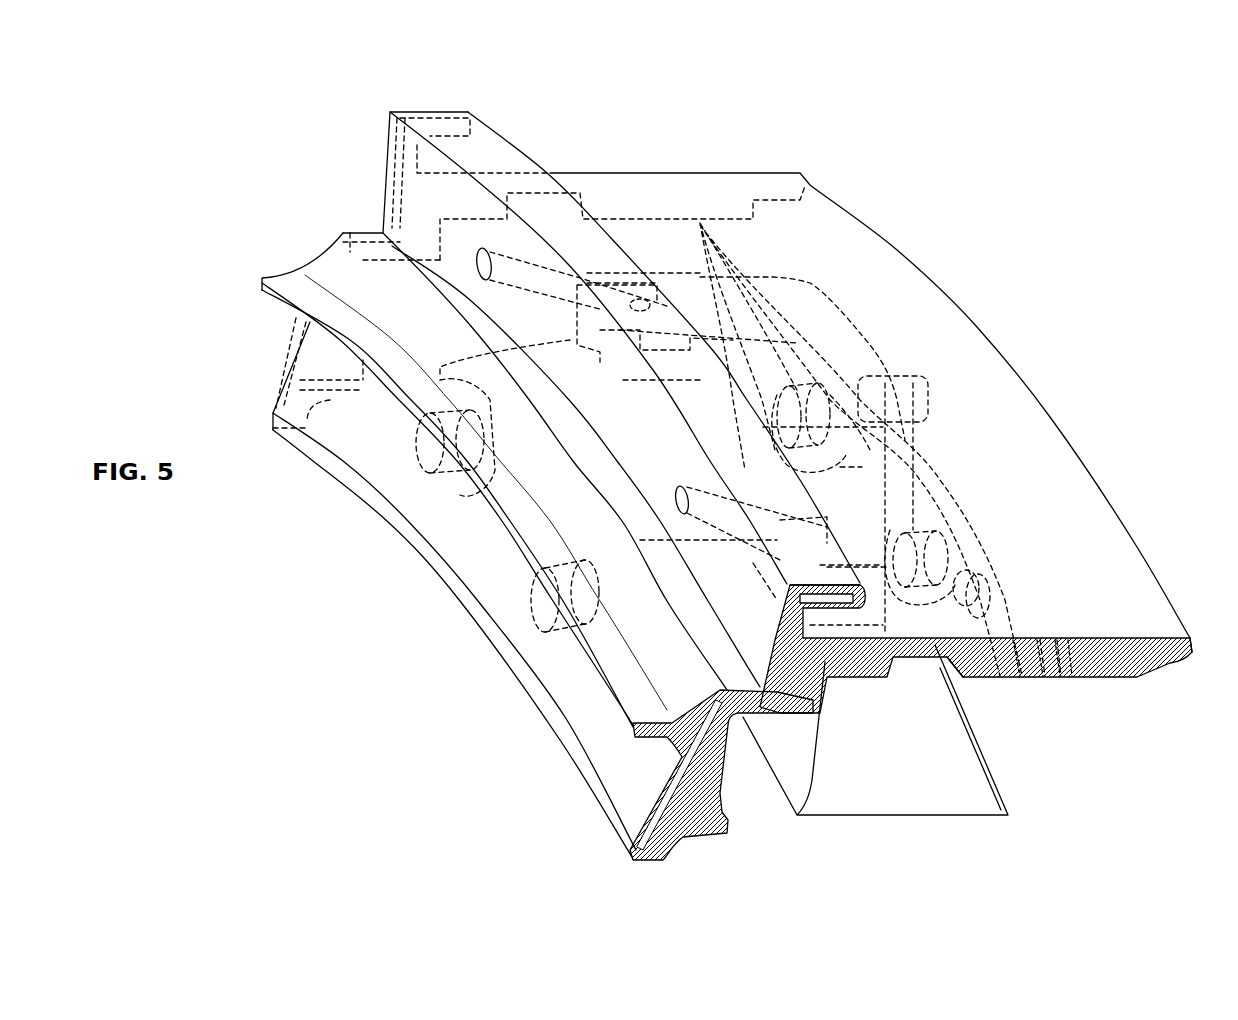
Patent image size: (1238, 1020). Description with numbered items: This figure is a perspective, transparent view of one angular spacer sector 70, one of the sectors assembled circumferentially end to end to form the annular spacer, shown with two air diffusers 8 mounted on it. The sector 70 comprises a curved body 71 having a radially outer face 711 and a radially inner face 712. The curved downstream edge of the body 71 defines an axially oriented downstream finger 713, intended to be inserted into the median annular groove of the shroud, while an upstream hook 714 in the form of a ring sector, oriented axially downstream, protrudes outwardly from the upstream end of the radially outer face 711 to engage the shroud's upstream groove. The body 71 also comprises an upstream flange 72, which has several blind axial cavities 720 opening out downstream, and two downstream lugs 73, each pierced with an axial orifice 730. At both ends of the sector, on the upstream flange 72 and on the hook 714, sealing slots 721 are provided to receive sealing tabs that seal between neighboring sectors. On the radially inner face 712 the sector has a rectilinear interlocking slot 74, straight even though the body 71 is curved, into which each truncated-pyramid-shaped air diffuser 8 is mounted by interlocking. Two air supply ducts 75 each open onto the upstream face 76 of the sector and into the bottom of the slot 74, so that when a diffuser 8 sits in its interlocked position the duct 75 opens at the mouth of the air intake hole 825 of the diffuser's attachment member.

The angular spacer sector 70 is at (550, 833).
The curved body 71 is at (720, 200).
The radially outer face 711 is at (790, 245).
The radially inner face 712 is at (1090, 683).
The downstream finger 713 is at (1172, 665).
The upstream hook 714 is at (450, 108).
The upstream flange 72 is at (497, 576).
The blind axial cavities 720 is at (490, 493).
The sealing slots 721 is at (683, 780).
The downstream lugs 73 is at (850, 462).
The axial orifice 730 is at (843, 417).
The interlocking slot 74 is at (946, 677).
The air supply duct 75 is at (520, 273).
The upstream face 76 is at (383, 176).
The air diffuser 8 is at (892, 750).
The air intake hole 825 is at (790, 530).